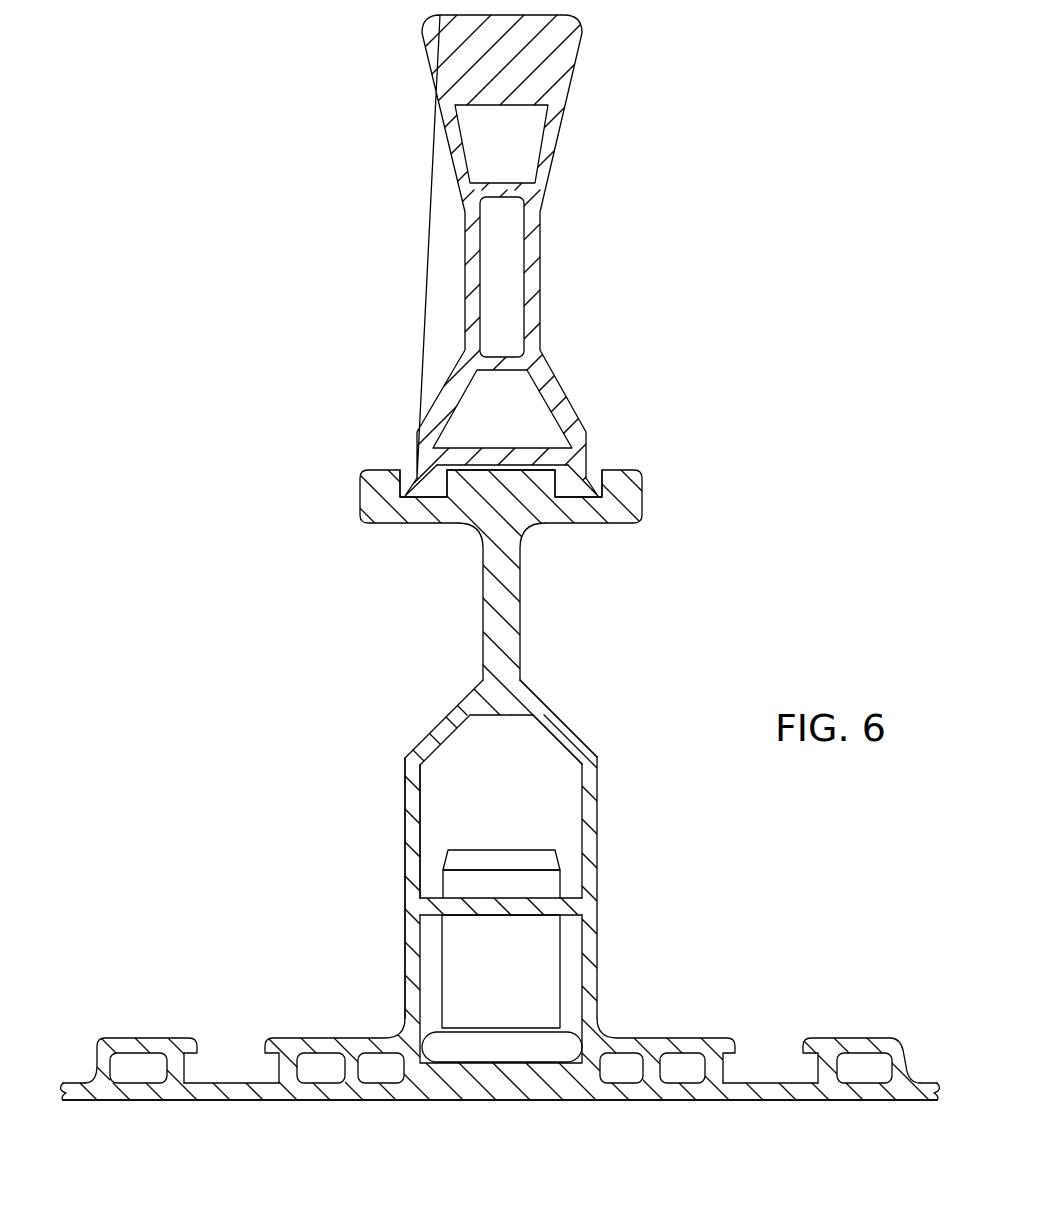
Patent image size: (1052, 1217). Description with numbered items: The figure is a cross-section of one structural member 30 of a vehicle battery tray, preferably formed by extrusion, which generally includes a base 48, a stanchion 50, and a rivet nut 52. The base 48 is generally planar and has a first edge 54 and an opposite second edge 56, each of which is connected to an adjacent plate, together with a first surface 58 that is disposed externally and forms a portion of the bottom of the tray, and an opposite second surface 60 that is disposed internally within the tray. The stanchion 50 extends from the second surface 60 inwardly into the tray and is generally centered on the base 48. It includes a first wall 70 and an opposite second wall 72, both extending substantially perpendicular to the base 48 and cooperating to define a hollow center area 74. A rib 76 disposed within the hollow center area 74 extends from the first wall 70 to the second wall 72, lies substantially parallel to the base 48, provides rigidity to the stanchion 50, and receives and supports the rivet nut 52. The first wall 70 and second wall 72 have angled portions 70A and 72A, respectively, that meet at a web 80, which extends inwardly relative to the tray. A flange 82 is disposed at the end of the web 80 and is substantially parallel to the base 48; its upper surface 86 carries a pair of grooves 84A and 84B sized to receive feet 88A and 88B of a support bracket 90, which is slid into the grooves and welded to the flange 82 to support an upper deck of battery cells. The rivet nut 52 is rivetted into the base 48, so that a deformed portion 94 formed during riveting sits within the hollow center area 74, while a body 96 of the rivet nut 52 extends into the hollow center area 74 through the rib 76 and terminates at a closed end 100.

The structural member 30 is at (691, 636).
The base 48 is at (766, 1082).
The stanchion 50 is at (537, 708).
The rivet nut 52 is at (455, 886).
The first edge 54 is at (66, 1086).
The second edge 56 is at (946, 1085).
The first surface 58 is at (271, 1099).
The second surface 60 is at (240, 1084).
The first wall 70 is at (410, 912).
The angled portion 70A is at (432, 745).
The second wall 72 is at (592, 828).
The angled portion 72A is at (584, 745).
The hollow center area 74 is at (532, 798).
The rib 76 is at (572, 900).
The web 80 is at (488, 612).
The flange 82 is at (642, 498).
The groove 84A is at (420, 478).
The groove 84B is at (588, 482).
The upper surface 86 is at (618, 468).
The foot 88A is at (425, 472).
The foot 88B is at (582, 472).
The support bracket 90 is at (468, 272).
The deformed portion 94 is at (440, 1040).
The body 96 is at (560, 955).
The closed end 100 is at (494, 850).